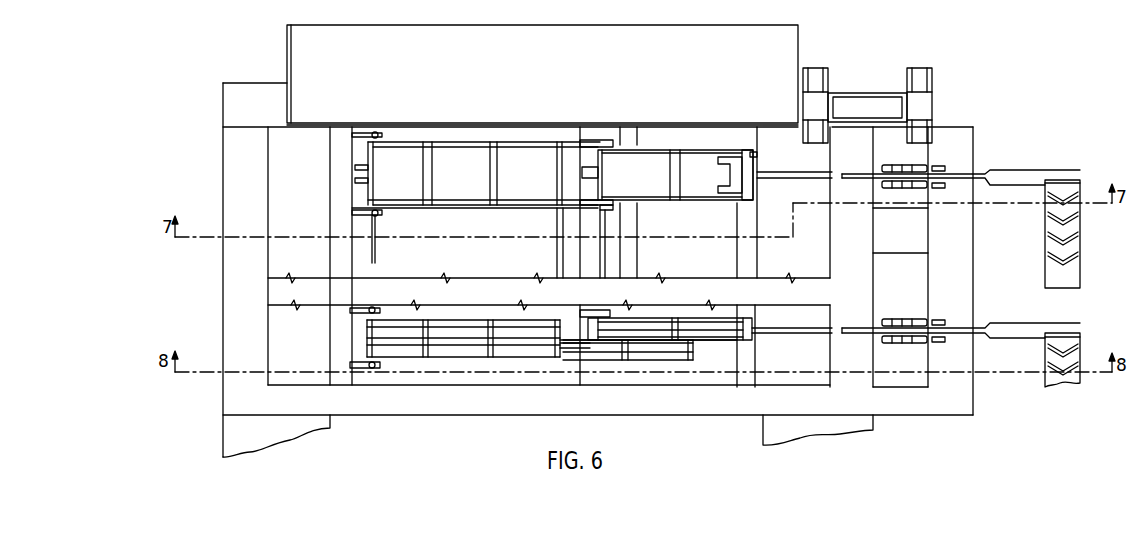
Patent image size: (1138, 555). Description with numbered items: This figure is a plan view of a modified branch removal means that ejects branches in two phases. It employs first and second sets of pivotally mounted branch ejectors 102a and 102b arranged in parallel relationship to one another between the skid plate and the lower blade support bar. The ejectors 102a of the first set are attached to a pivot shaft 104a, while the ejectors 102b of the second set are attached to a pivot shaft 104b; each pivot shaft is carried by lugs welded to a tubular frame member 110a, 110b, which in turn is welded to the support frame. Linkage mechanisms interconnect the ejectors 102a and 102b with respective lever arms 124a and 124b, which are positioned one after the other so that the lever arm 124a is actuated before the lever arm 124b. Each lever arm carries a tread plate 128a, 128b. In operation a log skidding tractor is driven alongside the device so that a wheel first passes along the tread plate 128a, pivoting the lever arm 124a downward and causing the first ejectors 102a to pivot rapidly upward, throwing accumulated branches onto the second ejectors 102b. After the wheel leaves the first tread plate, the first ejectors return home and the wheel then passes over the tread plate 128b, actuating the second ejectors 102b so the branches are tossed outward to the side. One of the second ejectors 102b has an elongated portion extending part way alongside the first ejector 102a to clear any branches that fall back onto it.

The first set of branch ejectors 102a is at (697, 205).
The second set of branch ejectors 102b is at (572, 339).
The pivot shaft 104a is at (608, 208).
The pivot shaft 104b is at (372, 263).
The tubular frame member 110a is at (567, 221).
The tubular frame member 110b is at (337, 258).
The lever arm 124a is at (1008, 331).
The lever arm 124b is at (1020, 177).
The tread plate 128a is at (1050, 357).
The tread plate 128b is at (1068, 247).